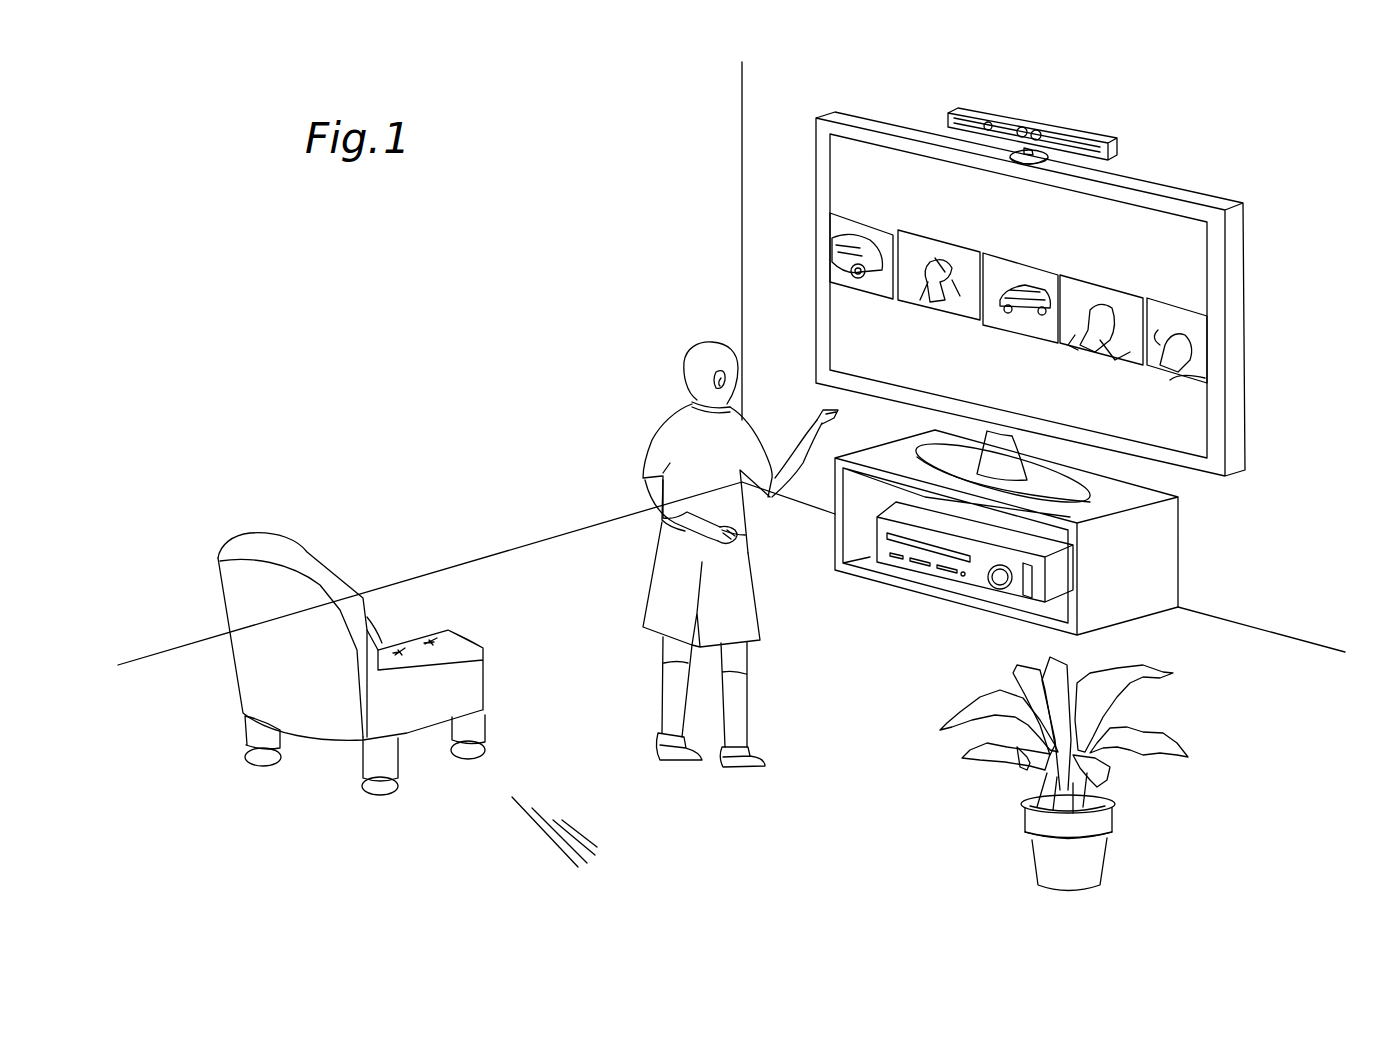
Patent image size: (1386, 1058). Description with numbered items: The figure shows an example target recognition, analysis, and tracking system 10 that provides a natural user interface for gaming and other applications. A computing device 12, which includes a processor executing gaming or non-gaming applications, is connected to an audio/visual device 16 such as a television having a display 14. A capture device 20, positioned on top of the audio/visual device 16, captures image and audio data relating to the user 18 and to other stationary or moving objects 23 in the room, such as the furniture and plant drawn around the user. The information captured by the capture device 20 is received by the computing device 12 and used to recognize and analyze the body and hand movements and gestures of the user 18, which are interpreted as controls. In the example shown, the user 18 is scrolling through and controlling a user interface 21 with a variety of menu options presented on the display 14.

The target recognition, analysis, and tracking system 10 is at (1226, 120).
The computing device 12 is at (977, 587).
The display 14 is at (1208, 390).
The audio/visual device 16 is at (1246, 283).
The user 18 is at (678, 432).
The capture device 20 is at (1040, 122).
The user interface 21 is at (1155, 240).
The objects 23 is at (272, 535).